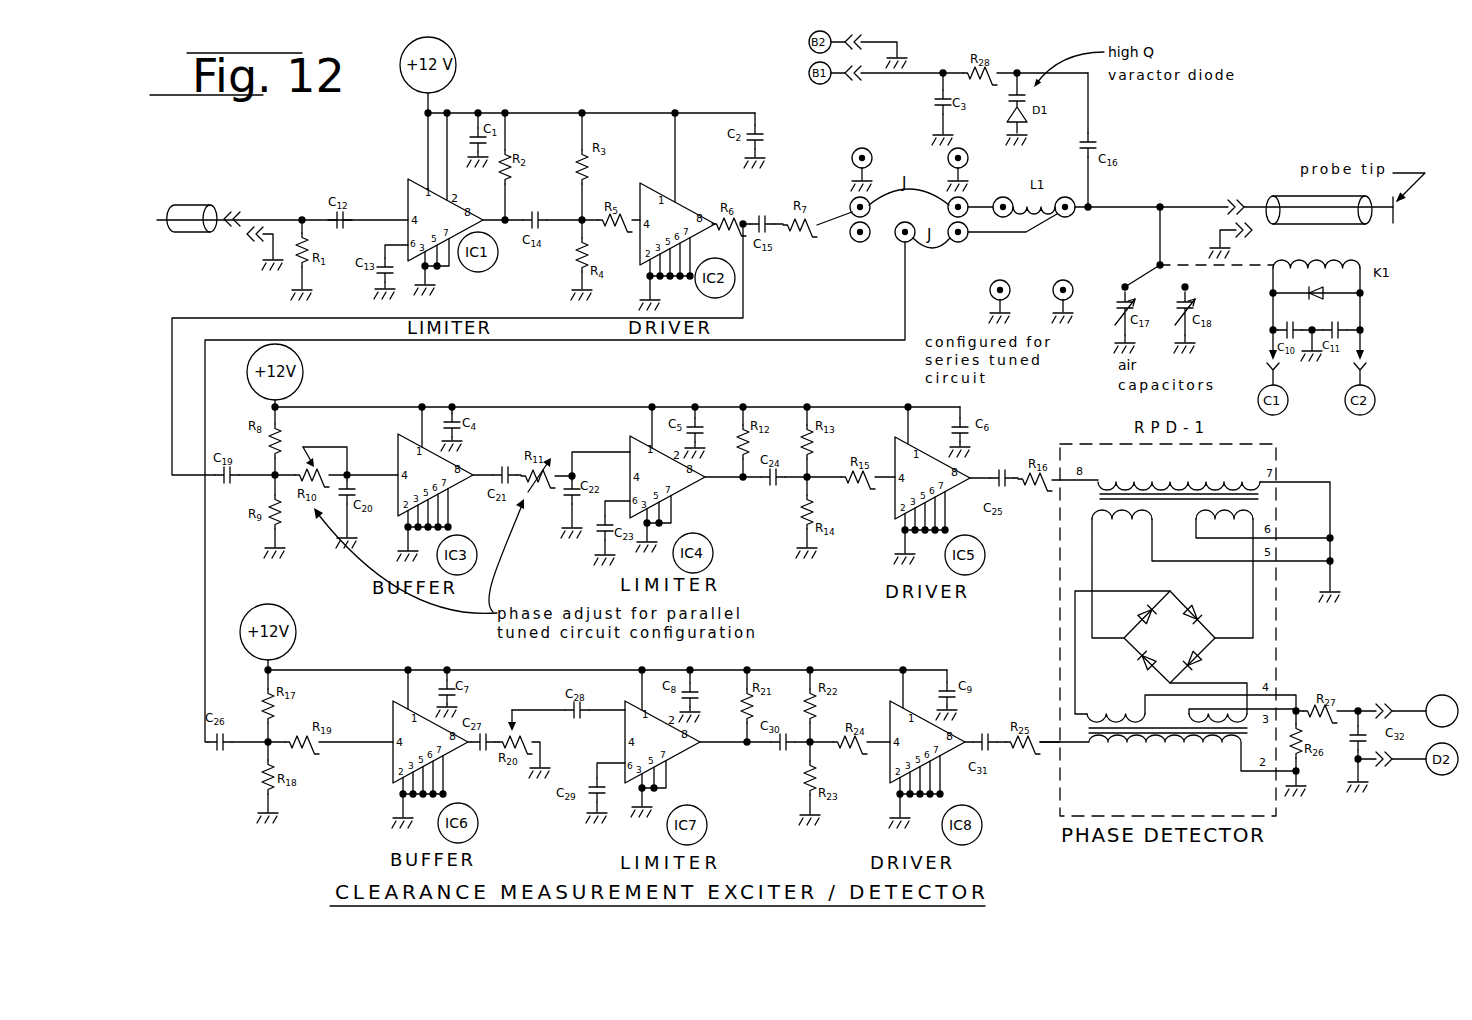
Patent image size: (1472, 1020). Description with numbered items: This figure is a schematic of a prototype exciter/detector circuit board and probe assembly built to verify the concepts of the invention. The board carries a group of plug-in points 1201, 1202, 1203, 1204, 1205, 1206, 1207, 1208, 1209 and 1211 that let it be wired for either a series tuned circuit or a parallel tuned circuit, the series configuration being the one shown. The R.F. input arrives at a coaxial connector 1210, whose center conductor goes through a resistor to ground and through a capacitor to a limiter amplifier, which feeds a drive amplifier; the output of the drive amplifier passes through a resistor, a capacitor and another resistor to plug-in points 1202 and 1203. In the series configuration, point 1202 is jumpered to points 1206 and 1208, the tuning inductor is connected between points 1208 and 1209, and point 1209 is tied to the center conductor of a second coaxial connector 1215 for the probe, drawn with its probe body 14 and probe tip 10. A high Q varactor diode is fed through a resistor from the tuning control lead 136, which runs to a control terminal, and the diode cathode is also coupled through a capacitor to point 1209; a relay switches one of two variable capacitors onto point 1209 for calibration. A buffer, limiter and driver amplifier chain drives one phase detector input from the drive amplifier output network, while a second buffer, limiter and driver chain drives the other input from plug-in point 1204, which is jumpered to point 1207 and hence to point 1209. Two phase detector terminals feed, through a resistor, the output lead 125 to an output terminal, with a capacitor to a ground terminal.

The probe tip 10 is at (1404, 232).
The probe 14 is at (1284, 196).
The output lead 125 is at (1432, 696).
The tuning control lead 136 is at (873, 79).
The plug-in point 1201 is at (864, 148).
The plug-in point 1202 is at (851, 199).
The plug-in point 1203 is at (856, 243).
The plug-in point 1204 is at (900, 268).
The plug-in point 1205 is at (949, 160).
The plug-in point 1206 is at (966, 198).
The plug-in point 1207 is at (966, 239).
The plug-in point 1208 is at (1004, 197).
The plug-in point 1209 is at (1072, 218).
The coaxial connector 1210 is at (250, 196).
The plug-in point 1211 is at (1068, 280).
The coaxial connector 1215 is at (1229, 198).